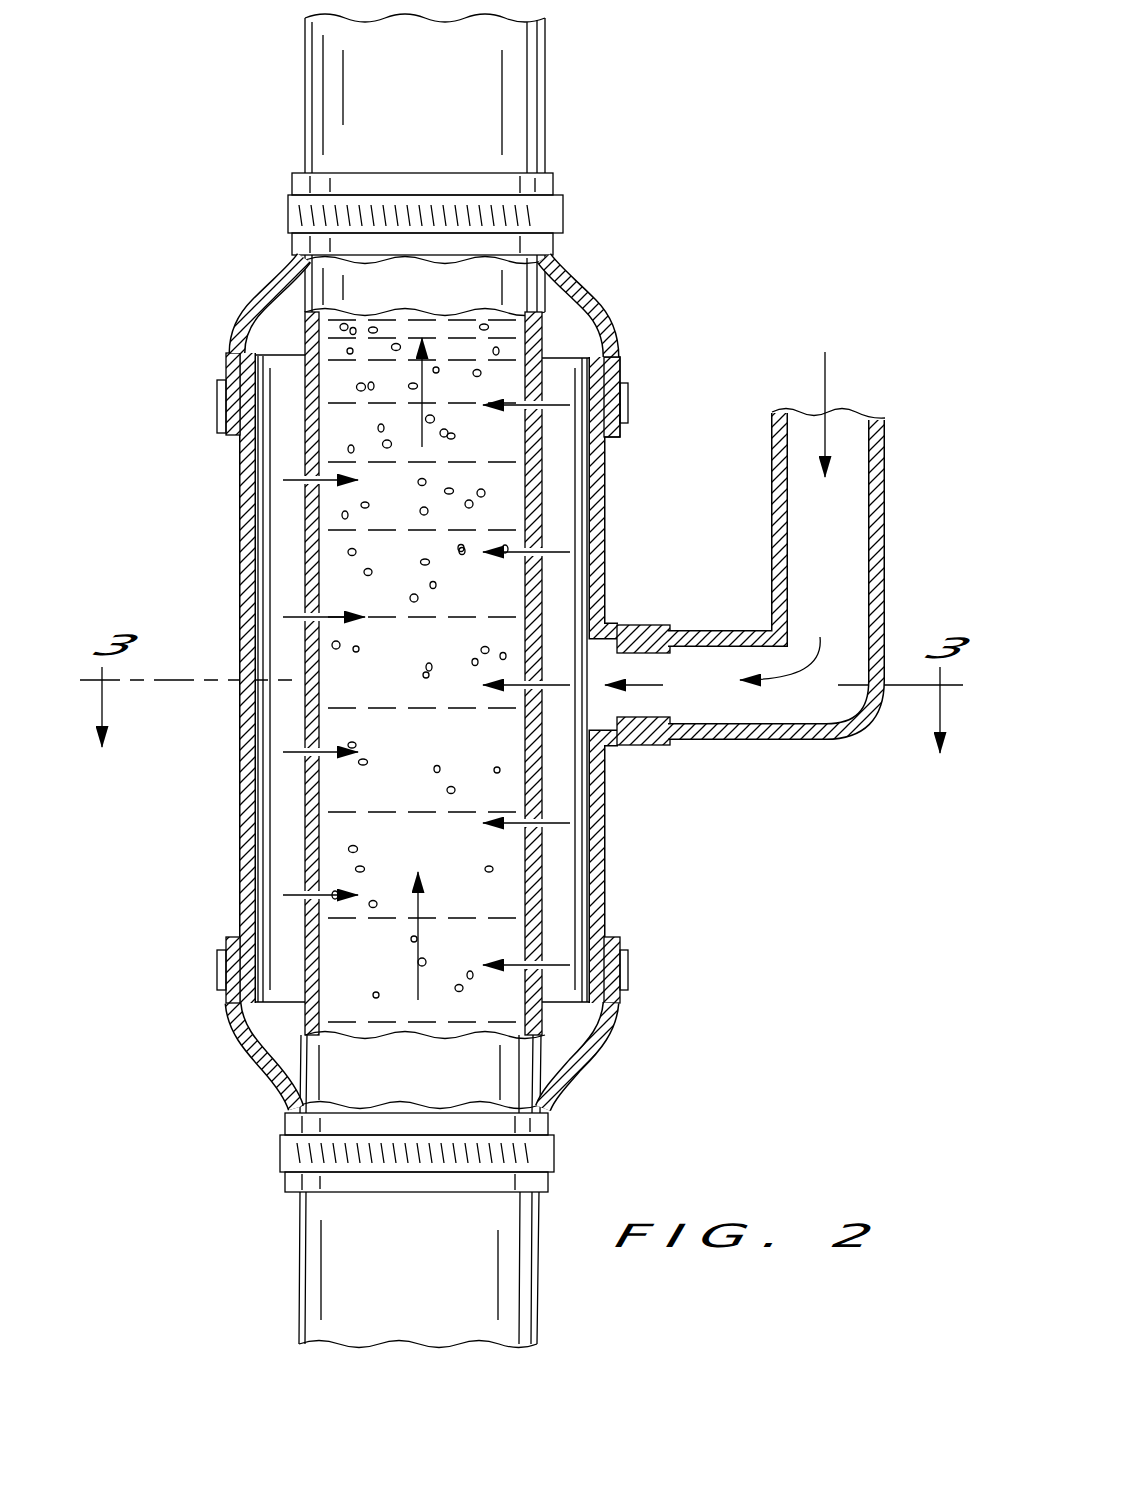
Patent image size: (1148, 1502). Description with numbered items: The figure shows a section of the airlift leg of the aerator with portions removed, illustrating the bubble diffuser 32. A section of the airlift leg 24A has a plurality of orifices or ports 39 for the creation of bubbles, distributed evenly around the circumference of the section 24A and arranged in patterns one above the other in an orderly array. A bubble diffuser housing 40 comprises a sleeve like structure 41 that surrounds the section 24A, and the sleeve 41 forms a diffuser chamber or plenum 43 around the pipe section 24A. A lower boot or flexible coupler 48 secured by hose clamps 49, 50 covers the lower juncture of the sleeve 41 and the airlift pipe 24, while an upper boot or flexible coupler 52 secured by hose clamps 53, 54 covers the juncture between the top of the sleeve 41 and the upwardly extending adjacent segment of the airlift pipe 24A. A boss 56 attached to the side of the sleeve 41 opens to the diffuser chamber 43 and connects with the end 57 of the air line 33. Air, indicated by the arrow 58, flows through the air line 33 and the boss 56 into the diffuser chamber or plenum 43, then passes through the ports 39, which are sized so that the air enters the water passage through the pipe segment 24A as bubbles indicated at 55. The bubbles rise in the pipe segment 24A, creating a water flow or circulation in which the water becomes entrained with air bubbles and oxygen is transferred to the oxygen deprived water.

The airlift pipe 24 is at (545, 72).
The section of the airlift leg 24A is at (540, 523).
The bubble diffuser 32 is at (222, 470).
The air line 33 is at (887, 530).
The ports 39 is at (308, 617).
The bubble diffuser housing 40 is at (235, 520).
The sleeve 41 is at (237, 861).
The diffuser chamber 43 is at (560, 912).
The lower boot 48 is at (585, 1072).
The hose clamp 49 is at (215, 978).
The hose clamp 50 is at (280, 1150).
The upper boot 52 is at (545, 280).
The hose clamp 53 is at (288, 215).
The hose clamp 54 is at (625, 400).
The bubbles 55 is at (533, 328).
The boss 56 is at (645, 626).
The end of the air line 57 is at (650, 747).
The arrow indicating air flow 58 is at (827, 402).